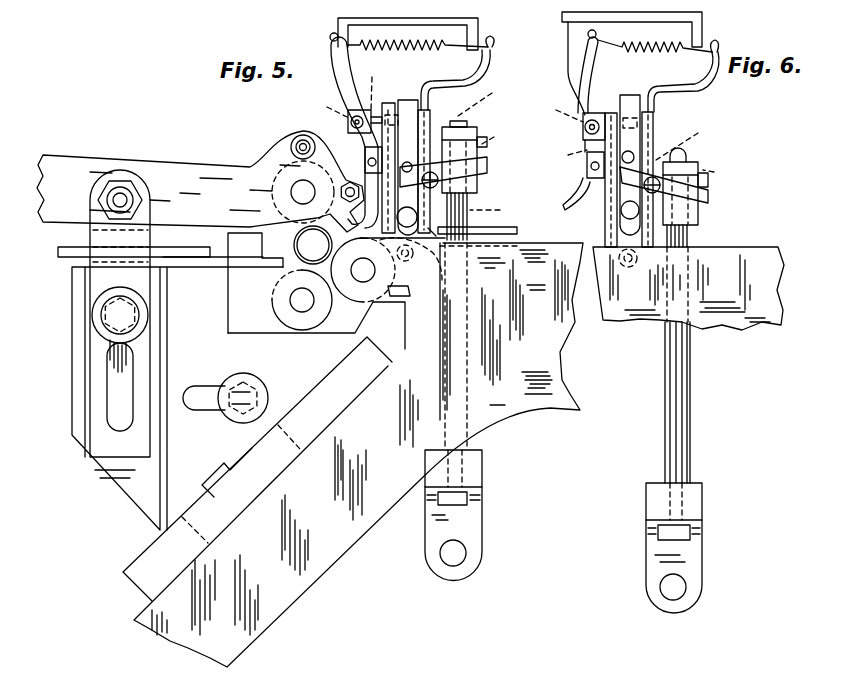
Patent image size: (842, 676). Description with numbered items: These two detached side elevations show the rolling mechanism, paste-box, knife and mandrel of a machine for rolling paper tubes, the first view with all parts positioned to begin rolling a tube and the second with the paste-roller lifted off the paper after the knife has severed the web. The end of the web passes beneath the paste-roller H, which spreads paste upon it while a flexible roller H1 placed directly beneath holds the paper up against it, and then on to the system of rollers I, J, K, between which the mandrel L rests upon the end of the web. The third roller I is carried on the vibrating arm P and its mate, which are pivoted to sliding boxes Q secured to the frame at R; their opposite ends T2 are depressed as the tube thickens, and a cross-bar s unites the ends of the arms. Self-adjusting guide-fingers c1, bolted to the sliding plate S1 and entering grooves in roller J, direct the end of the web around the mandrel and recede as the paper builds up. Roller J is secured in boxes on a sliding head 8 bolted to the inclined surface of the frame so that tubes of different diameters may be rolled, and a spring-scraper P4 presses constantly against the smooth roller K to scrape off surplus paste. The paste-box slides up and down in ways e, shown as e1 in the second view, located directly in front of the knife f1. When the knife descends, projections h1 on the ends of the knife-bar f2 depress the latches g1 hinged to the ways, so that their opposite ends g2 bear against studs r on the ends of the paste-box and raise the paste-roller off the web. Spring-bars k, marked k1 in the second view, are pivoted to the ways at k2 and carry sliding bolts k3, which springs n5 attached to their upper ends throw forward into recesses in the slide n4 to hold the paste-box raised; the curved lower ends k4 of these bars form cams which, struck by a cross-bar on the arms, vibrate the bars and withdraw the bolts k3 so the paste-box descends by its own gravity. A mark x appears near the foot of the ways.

In FIG. 5, the opposite ends of the hinged arms T2 is at (200, 181).
In FIG. 5, the cross-bar s is at (349, 184).
In FIG. 5, the third roller I is at (303, 192).
In FIG. 5, the mandrel L is at (313, 245).
In FIG. 5, the smooth roller K is at (368, 293).
In FIG. 5, the adjustable roller J is at (302, 300).
In FIG. 5, the securing point of sliding boxes R is at (120, 359).
In FIG. 5, the sliding boxes Q is at (177, 393).
In FIG. 5, the sliding plate S1 is at (134, 266).
In FIG. 5, the self-adjusting guide-fingers c1 is at (255, 283).
In FIG. 5, the sliding head 8 is at (257, 469).
In FIG. 5, the vibrating arm P is at (358, 455).
In FIG. 5, the flexible roller H1 is at (411, 259).
In FIG. 5, the paste-roller H is at (435, 268).
In FIG. 5, the spring-scraper P4 is at (412, 291).
In FIG. 5, the spring-bar k is at (346, 130).
In FIG. 5, the pivot of spring-bars k2 is at (323, 102).
In FIG. 6, the pivot of spring-bars k2 is at (567, 120).
In FIG. 5, the sliding bolts k3 is at (371, 82).
In FIG. 6, the sliding bolts k3 is at (567, 153).
In FIG. 5, the curved lower ends of lock-bars k4 is at (359, 219).
In FIG. 6, the curved lower ends of lock-bars k4 is at (554, 201).
In FIG. 5, the ways e1 is at (388, 160).
In FIG. 6, the ways e1 is at (680, 149).
In FIG. 5, the slide n4 is at (401, 167).
In FIG. 6, the slide n4 is at (630, 165).
In FIG. 5, the ways e is at (454, 141).
In FIG. 6, the ways e is at (611, 171).
In FIG. 5, the knife f1 is at (477, 161).
In FIG. 6, the knife f1 is at (672, 354).
In FIG. 5, the projections h1 is at (473, 157).
In FIG. 6, the projections h1 is at (694, 186).
In FIG. 5, the latches g1 is at (453, 170).
In FIG. 6, the latches g1 is at (672, 186).
In FIG. 5, the studs r is at (405, 160).
In FIG. 6, the studs r is at (627, 150).
In FIG. 5, the point x is at (424, 233).
In FIG. 5, the springs n5 is at (420, 34).
In FIG. 6, the springs n5 is at (658, 35).
In FIG. 6, the spring-bars k1 is at (585, 120).
In FIG. 6, the knife-bar f2 is at (612, 157).
In FIG. 6, the opposite ends of latches g2 is at (686, 140).